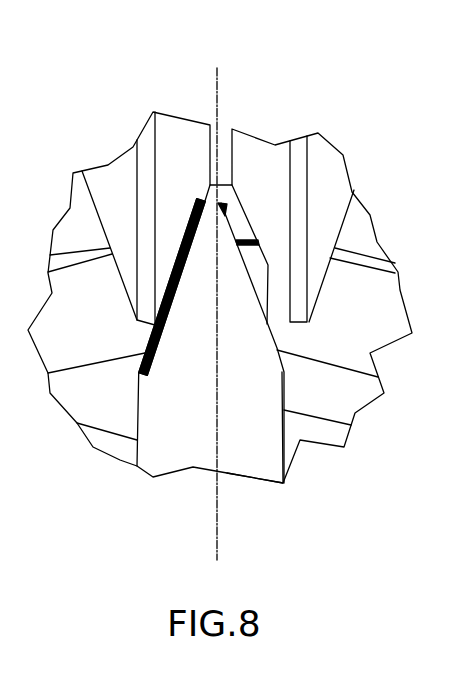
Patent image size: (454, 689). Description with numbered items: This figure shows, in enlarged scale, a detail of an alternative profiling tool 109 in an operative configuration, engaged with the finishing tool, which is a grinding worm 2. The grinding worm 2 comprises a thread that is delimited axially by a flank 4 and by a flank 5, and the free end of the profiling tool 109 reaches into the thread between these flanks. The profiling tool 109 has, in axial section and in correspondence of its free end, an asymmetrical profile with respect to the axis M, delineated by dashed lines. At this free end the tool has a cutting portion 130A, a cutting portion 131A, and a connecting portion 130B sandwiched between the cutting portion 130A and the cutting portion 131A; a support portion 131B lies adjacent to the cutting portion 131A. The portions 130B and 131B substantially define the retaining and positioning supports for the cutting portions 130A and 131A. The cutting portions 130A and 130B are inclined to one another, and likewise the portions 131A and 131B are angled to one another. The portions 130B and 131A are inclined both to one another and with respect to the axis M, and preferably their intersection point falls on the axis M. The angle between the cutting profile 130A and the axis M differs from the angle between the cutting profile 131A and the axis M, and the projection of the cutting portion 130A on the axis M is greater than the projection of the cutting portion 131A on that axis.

The grinding worm 2 is at (267, 148).
The flank 4 is at (183, 137).
The flank 5 is at (255, 163).
The axis M is at (218, 70).
The profiling tool 109 is at (258, 476).
The cutting portion 130A is at (201, 198).
The connecting portion 130B is at (180, 248).
The cutting portion 131A is at (227, 203).
The support portion 131B is at (253, 265).